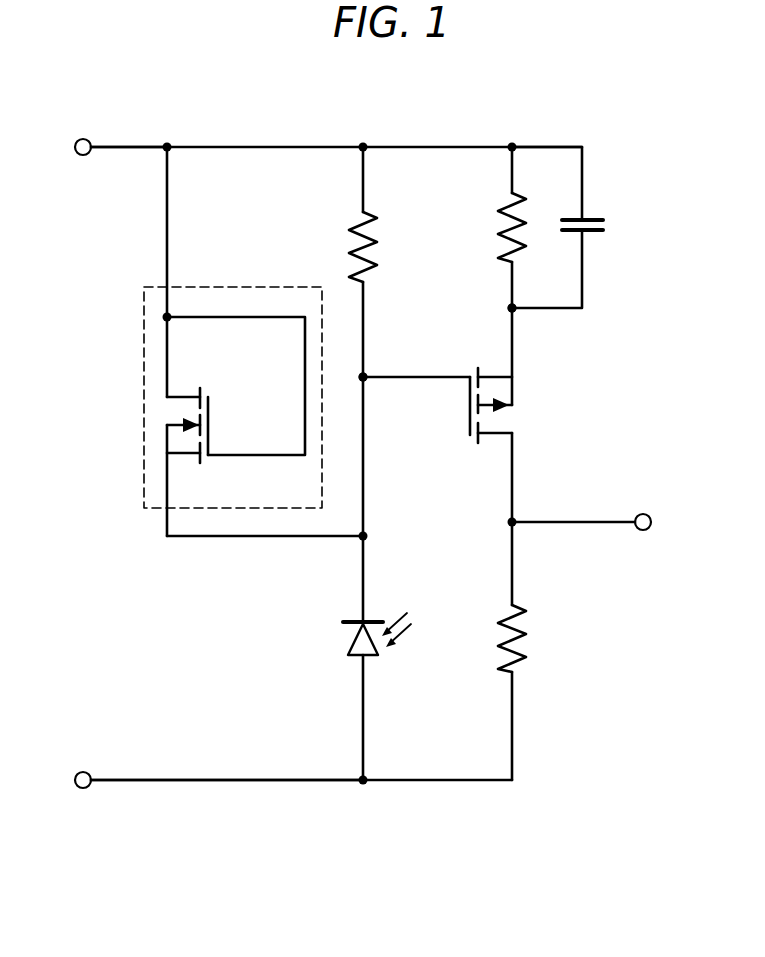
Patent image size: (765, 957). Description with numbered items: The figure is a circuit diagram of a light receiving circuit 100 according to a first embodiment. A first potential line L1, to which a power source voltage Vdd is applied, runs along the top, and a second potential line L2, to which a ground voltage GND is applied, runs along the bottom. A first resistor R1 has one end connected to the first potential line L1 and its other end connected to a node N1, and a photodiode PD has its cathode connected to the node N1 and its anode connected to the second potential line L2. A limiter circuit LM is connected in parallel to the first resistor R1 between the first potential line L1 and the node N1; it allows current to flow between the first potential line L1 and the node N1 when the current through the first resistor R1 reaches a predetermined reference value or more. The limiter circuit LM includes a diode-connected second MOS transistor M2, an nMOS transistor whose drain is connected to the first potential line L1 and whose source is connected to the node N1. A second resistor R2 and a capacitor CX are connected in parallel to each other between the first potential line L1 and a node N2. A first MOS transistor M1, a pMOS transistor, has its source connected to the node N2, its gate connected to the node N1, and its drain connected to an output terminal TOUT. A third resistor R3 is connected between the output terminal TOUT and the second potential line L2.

The light receiving circuit 100 is at (381, 928).
The first potential line L1 is at (93, 141).
The second potential line L2 is at (90, 785).
The power source voltage Vdd is at (86, 127).
The ground voltage GND is at (80, 805).
The limiter circuit LM is at (187, 397).
The second MOS transistor M2 is at (178, 455).
The first MOS transistor M1 is at (492, 437).
The first resistor R1 is at (355, 229).
The second resistor R2 is at (500, 210).
The third resistor R3 is at (526, 646).
The capacitor CX is at (606, 214).
The node N1 is at (366, 380).
The node N2 is at (515, 310).
The photodiode PD is at (342, 642).
The output terminal TOUT is at (640, 513).